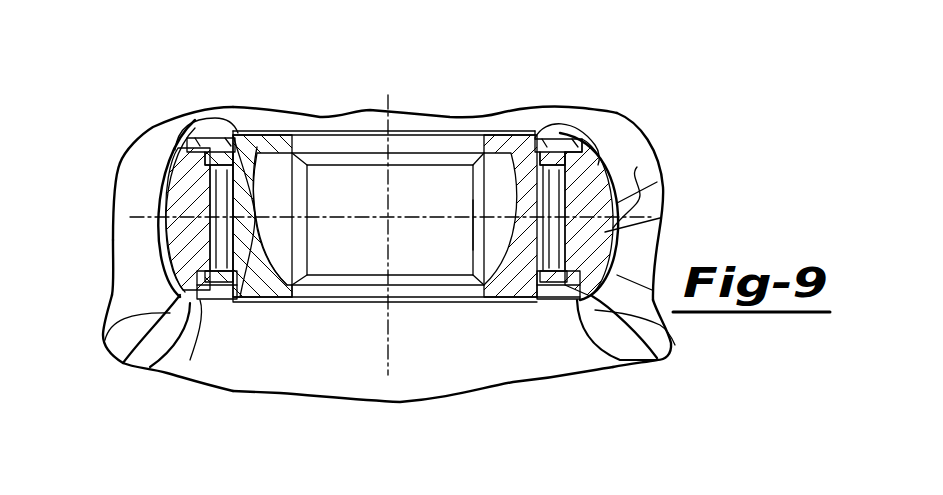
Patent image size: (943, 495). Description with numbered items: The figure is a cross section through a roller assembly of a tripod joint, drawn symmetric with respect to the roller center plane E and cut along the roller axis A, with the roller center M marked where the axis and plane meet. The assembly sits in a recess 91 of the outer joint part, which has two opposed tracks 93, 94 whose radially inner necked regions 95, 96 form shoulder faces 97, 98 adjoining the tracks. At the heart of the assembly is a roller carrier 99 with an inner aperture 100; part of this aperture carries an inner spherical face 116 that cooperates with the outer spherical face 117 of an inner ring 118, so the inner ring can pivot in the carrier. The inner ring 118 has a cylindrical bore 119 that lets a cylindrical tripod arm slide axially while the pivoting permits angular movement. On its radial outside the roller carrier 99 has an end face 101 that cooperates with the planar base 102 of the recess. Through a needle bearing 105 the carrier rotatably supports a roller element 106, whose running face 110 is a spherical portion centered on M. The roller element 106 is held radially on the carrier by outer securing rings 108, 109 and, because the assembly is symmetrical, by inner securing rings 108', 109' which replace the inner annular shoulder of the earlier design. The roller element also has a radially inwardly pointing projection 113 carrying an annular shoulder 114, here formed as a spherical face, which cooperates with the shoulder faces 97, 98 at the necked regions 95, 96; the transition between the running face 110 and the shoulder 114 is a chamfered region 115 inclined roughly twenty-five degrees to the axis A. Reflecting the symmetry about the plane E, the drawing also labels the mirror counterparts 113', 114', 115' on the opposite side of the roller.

The recess 91 is at (303, 210).
The track 93 is at (172, 118).
The track 94 is at (630, 163).
The necked region 95 is at (120, 342).
The necked region 96 is at (657, 333).
The shoulder face 97 is at (177, 373).
The shoulder face 98 is at (611, 364).
The roller carrier 99 is at (289, 131).
The inner aperture 100 is at (300, 130).
The end face 101 is at (262, 125).
The planar base 102 is at (330, 135).
The needle bearing 105 is at (475, 131).
The roller element 106 is at (618, 130).
The securing ring 108 is at (541, 104).
The inner securing ring 108' is at (530, 321).
The securing ring 109 is at (583, 152).
The inner securing ring 109' is at (423, 365).
The running face 110 is at (592, 230).
The radially inwardly pointing projection 113 is at (212, 357).
The left bolt 113' is at (234, 163).
The annular shoulder 114 is at (121, 230).
The left bolt head 114' is at (209, 97).
The chamfered region 115 is at (110, 208).
The left housing wall 115' is at (160, 185).
The inner spherical face 116 is at (296, 303).
The outer spherical face 117 is at (259, 302).
The inner ring 118 is at (505, 235).
The cylindrical bore 119 is at (467, 245).
The axis A is at (388, 108).
The center plane E is at (132, 180).
The center M is at (378, 215).